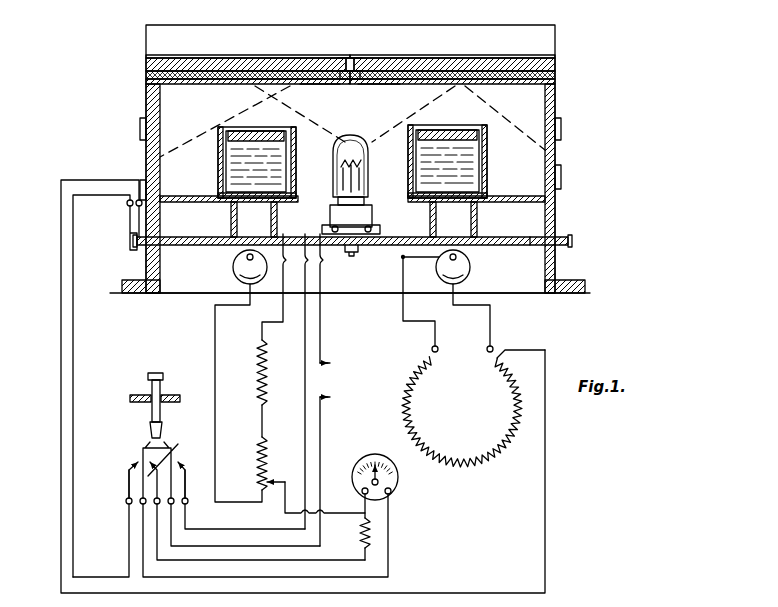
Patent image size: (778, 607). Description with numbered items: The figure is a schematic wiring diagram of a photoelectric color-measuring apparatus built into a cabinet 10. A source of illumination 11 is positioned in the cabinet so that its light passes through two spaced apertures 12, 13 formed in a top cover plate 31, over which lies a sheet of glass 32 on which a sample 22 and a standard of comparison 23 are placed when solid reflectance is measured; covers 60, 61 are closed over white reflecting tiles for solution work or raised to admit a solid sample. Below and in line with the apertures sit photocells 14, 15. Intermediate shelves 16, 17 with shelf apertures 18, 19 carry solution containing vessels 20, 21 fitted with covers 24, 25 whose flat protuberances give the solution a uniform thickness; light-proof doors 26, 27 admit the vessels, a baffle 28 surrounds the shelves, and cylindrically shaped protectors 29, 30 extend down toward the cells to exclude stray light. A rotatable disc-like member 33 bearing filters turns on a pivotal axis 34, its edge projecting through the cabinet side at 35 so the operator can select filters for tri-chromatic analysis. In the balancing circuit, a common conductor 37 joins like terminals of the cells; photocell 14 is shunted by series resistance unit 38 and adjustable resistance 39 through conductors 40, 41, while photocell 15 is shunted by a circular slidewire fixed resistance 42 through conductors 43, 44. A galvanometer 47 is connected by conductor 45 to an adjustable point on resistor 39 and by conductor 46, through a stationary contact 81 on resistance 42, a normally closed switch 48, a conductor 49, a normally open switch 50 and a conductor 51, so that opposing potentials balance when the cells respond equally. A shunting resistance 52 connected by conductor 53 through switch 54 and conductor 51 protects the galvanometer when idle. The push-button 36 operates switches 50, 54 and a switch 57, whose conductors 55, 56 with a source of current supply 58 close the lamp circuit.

The cabinet 10 is at (555, 100).
The source of illumination 11 is at (352, 138).
The aperture 12 is at (240, 85).
The aperture 13 is at (468, 84).
The photocell 14 is at (233, 266).
The photocell 15 is at (471, 266).
The intermediate shelf 16 is at (205, 196).
The intermediate shelf 17 is at (508, 195).
The shelf aperture 18 is at (232, 212).
The shelf aperture 19 is at (477, 205).
The solution containing vessel 20 is at (225, 150).
The solution containing vessel 21 is at (487, 157).
The sample 22 is at (185, 72).
The standard of comparison 23 is at (535, 67).
The cover 24 is at (238, 130).
The cover 25 is at (440, 128).
The light-proof door 26 is at (145, 150).
The light-proof door 27 is at (558, 152).
The baffle 28 is at (296, 145).
The cylindrically shaped protector 29 is at (277, 217).
The cylindrically shaped protector 30 is at (430, 211).
The cover plate 31 is at (316, 85).
The sheet of glass 32 is at (360, 85).
The rotatable disc-like member 33 is at (530, 247).
The pivotal axis 34 is at (348, 250).
The disc edge 35 is at (566, 240).
The push-button 36 is at (156, 372).
The common conductor 37 is at (392, 258).
The resistance unit 38 is at (258, 375).
The adjustable resistance 39 is at (258, 457).
The conductor 40 is at (283, 311).
The conductor 41 is at (215, 330).
The fixed resistance 42 is at (498, 444).
The conductor 43 is at (402, 320).
The conductor 44 is at (498, 313).
The conductor 45 is at (332, 512).
The conductor 46 is at (60, 378).
The galvanometer 47 is at (399, 479).
The normally closed switch 48 is at (135, 228).
The conductor 49 is at (73, 332).
The normally open switch 50 is at (129, 476).
The conductor 51 is at (255, 593).
The shunting resistance 52 is at (360, 533).
The conductor 53 is at (268, 560).
The switch 54 is at (168, 456).
The conductor 55 is at (228, 530).
The conductor 56 is at (226, 546).
The switch 57 is at (183, 470).
The source of current supply 58 is at (330, 396).
The cover 60 is at (333, 66).
The cover 61 is at (368, 66).
The stationary contact 81 is at (507, 352).